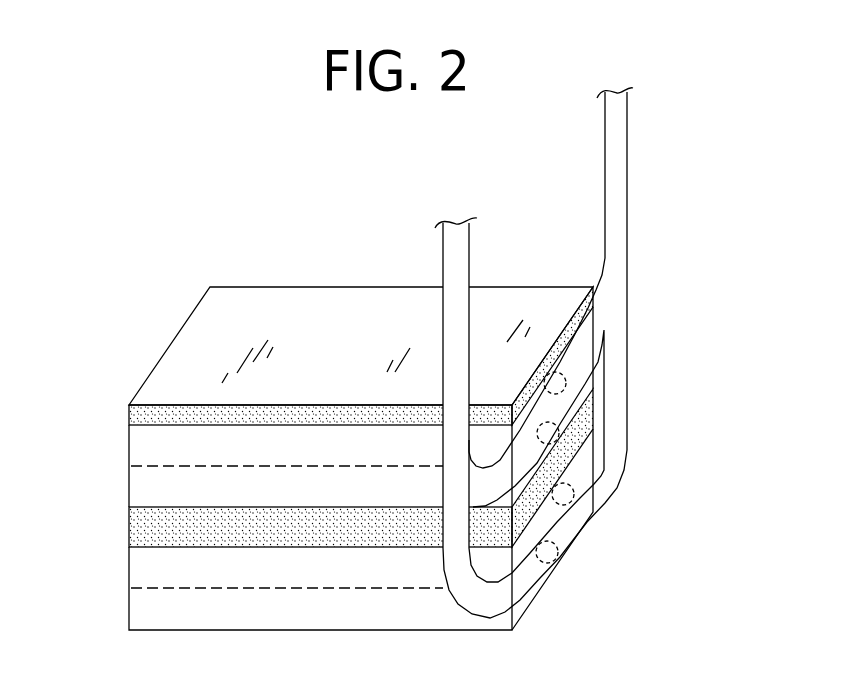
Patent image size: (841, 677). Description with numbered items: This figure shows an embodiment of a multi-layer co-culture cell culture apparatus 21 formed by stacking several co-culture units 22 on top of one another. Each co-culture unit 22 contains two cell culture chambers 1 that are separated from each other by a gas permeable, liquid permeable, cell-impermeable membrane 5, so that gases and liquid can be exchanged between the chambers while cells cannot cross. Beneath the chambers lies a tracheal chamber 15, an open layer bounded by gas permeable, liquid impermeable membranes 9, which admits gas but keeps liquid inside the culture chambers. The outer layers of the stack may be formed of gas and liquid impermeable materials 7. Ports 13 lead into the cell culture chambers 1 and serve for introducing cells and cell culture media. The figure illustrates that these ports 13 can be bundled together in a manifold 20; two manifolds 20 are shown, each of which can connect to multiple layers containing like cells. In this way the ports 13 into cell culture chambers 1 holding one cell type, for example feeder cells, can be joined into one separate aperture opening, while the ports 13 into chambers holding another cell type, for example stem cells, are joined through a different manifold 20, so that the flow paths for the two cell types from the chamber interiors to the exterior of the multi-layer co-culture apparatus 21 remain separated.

The cell culture chambers 1 is at (70, 402).
The gas permeable, liquid permeable cell-impermeable membrane 5 is at (300, 588).
The gas and liquid impermeable materials 7 is at (167, 630).
The gas permeable, liquid impermeable membranes 9 is at (197, 527).
The ports 13 is at (562, 382).
The tracheal chamber 15 is at (130, 412).
The manifold 20 is at (627, 205).
The multi-layer co-culture apparatus 21 is at (168, 298).
The co-culture unit 22 is at (311, 436).